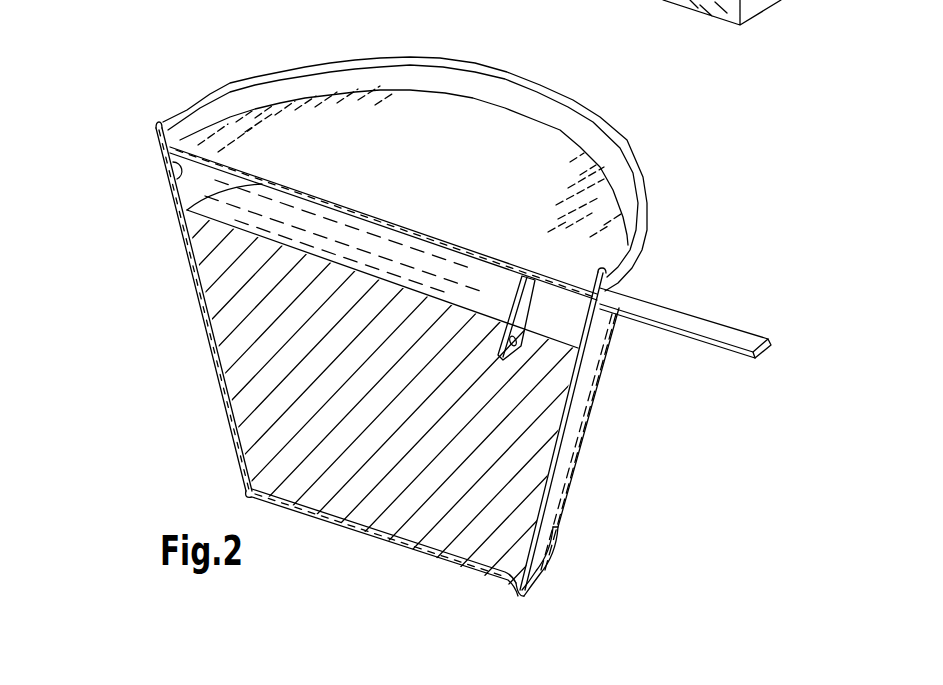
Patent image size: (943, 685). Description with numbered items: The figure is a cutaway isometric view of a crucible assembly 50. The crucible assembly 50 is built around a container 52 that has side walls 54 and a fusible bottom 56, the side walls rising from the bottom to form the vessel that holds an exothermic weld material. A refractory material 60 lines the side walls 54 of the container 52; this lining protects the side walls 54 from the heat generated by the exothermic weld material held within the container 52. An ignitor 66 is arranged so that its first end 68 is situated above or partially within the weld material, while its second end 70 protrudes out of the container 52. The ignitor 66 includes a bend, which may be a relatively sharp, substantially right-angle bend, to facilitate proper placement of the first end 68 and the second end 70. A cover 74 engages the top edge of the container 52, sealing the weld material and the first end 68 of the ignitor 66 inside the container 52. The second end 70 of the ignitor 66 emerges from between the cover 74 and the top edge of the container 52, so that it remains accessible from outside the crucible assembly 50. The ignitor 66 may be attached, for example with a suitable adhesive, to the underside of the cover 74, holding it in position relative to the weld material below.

The crucible assembly 50 is at (170, 62).
The container 52 is at (150, 208).
The side walls 54 is at (184, 234).
The fusible bottom 56 is at (346, 522).
The refractory material 60 is at (168, 161).
The ignitor 66 is at (686, 291).
The first end 68 is at (505, 356).
The second end 70 is at (748, 342).
The cover 74 is at (395, 98).